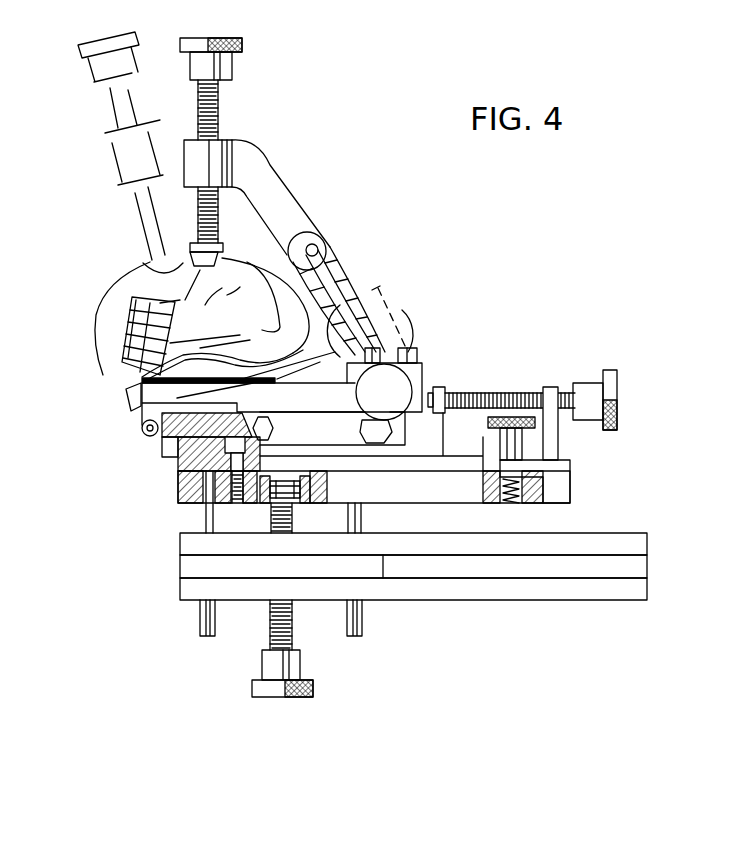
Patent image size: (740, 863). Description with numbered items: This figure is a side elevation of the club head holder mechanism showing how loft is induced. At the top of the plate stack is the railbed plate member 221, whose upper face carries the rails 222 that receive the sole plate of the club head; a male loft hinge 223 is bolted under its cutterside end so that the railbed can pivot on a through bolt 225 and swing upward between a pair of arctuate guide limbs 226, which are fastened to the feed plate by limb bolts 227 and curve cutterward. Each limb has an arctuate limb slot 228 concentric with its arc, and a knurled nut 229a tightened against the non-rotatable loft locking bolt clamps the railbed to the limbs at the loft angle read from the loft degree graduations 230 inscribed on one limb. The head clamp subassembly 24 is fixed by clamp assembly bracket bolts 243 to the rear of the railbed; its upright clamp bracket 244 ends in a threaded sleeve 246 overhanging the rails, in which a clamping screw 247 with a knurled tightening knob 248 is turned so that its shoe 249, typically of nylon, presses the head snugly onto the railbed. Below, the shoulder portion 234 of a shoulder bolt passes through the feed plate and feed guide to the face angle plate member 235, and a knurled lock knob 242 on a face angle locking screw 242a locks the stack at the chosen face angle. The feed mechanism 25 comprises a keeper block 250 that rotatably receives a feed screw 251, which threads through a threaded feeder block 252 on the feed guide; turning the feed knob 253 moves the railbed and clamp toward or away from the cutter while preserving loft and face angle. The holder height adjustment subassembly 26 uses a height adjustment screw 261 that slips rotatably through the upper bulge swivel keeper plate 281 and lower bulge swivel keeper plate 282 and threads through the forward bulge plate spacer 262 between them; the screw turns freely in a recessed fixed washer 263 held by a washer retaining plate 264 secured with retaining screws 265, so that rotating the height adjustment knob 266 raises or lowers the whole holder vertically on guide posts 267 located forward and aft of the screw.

The head clamp subassembly 24 is at (298, 193).
The feed mechanism 25 is at (610, 366).
The holder height adjustment subassembly 26 is at (260, 664).
The railbed plate member 221 is at (162, 392).
The rails 222 is at (128, 389).
The male loft hinge 223 is at (152, 437).
The through bolt 225 is at (142, 428).
The arctuate guide limbs 226 is at (325, 248).
The limb bolts 227 is at (360, 428).
The arctuate limb slot 228 is at (327, 273).
The knurled nut 229a is at (392, 385).
The loft degree graduations 230 is at (347, 275).
The shoulder portion of shoulder bolt 234 is at (223, 460).
The face angle plate member 235 is at (550, 465).
The knurled lock knob 242 is at (510, 440).
The face angle locking screw 242a is at (513, 492).
The clamp assembly bracket bolts 243 is at (405, 352).
The clamp bracket 244 is at (260, 172).
The threaded sleeve 246 is at (207, 157).
The clamping screw 247 is at (215, 102).
The knurled tightening knob 248 is at (208, 40).
The shoe 249 is at (186, 250).
The keeper block 250 is at (433, 390).
The feed screw 251 is at (498, 390).
The threaded feeder block 252 is at (550, 384).
The feed knob 253 is at (617, 383).
The height adjustment screw 261 is at (285, 627).
The forward bulge plate spacer 262 is at (200, 562).
The recessed fixed washer 263 is at (278, 473).
The washer retaining plate 264 is at (283, 498).
The retaining screws 265 is at (295, 505).
The height adjustment knob 266 is at (295, 697).
The guide posts 267 is at (203, 512).
The upper bulge swivel keeper plate 281 is at (470, 547).
The lower bulge swivel keeper plate 282 is at (462, 587).